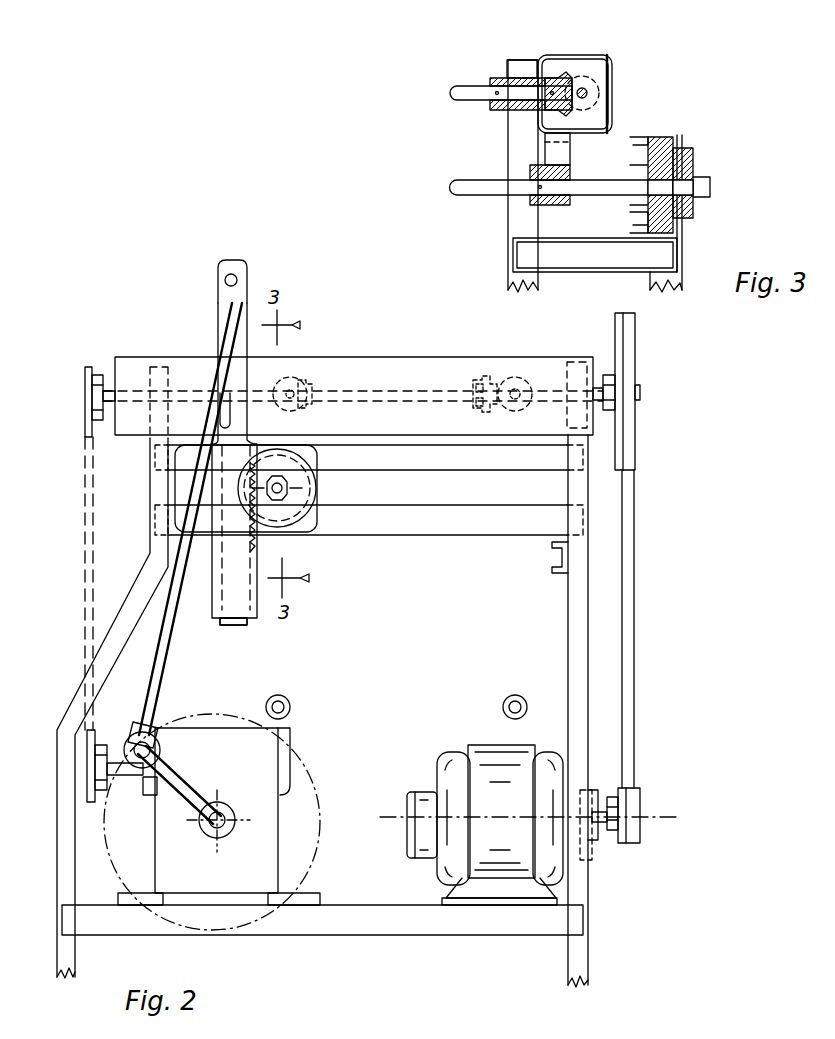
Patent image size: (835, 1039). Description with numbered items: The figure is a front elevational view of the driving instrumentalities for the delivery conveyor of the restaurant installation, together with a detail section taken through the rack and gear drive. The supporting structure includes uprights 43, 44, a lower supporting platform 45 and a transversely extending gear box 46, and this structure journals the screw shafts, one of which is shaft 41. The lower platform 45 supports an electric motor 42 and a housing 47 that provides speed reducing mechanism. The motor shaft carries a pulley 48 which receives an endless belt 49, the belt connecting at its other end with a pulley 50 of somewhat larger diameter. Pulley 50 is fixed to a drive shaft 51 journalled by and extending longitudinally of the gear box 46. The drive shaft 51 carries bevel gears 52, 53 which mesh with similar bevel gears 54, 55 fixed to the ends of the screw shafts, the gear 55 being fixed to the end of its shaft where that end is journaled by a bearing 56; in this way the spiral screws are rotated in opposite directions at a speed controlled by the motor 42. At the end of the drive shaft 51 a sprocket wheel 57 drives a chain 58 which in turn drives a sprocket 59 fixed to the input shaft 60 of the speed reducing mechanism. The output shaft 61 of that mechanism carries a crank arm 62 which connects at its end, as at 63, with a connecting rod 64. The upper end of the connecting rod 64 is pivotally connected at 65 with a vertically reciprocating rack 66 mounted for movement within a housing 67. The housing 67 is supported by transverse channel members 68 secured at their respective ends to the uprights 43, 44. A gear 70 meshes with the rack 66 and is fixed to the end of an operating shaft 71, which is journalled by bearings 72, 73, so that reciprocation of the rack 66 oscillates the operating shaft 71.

In FIG. 3, the shaft 41 is at (460, 88).
In FIG. 2, the electric motor 42 is at (488, 800).
In FIG. 2, the upright 43 is at (137, 597).
In FIG. 3, the upright 43 is at (525, 222).
In FIG. 2, the upright 44 is at (583, 612).
In FIG. 2, the lower supporting platform 45 is at (412, 915).
In FIG. 2, the gear box 46 is at (380, 370).
In FIG. 3, the gear box 46 is at (600, 55).
In FIG. 2, the housing 47 is at (202, 745).
In FIG. 2, the pulley 48 is at (640, 798).
In FIG. 2, the endless belt 49 is at (640, 690).
In FIG. 2, the pulley 50 is at (640, 425).
In FIG. 2, the drive shaft 51 is at (440, 370).
In FIG. 3, the drive shaft 51 is at (588, 97).
In FIG. 2, the bevel gear 52 is at (495, 370).
In FIG. 3, the bevel gear 52 is at (595, 88).
In FIG. 2, the bevel gear 53 is at (310, 378).
In FIG. 2, the bevel gear 54 is at (540, 372).
In FIG. 2, the bevel gear 55 is at (290, 375).
In FIG. 3, the bevel gear 55 is at (556, 78).
In FIG. 3, the bearing 56 is at (520, 78).
In FIG. 2, the sprocket wheel 57 is at (88, 380).
In FIG. 2, the chain 58 is at (85, 500).
In FIG. 2, the sprocket 59 is at (90, 785).
In FIG. 2, the input shaft 60 is at (130, 780).
In FIG. 2, the output shaft 61 is at (215, 845).
In FIG. 2, the crank arm 62 is at (182, 790).
In FIG. 2, the connection 63 is at (130, 740).
In FIG. 2, the connecting rod 64 is at (205, 385).
In FIG. 2, the pivotal connection 65 is at (232, 278).
In FIG. 2, the rack 66 is at (215, 330).
In FIG. 2, the housing 67 is at (238, 600).
In FIG. 2, the transverse channel members 68 is at (493, 517).
In FIG. 3, the transverse channel members 68 is at (640, 205).
In FIG. 2, the gear 70 is at (290, 505).
In FIG. 3, the gear 70 is at (690, 160).
In FIG. 3, the operating shaft 71 is at (490, 190).
In FIG. 3, the bearing 72 is at (660, 150).
In FIG. 3, the bearing 73 is at (545, 163).